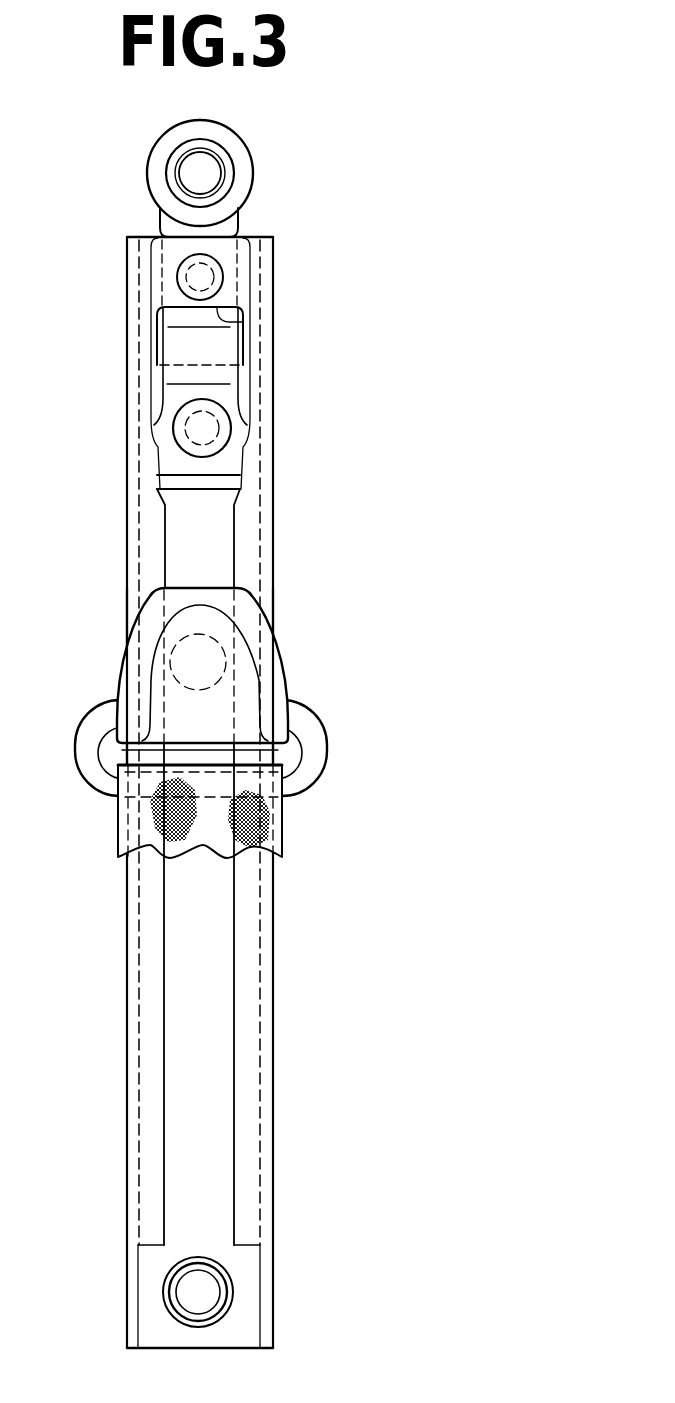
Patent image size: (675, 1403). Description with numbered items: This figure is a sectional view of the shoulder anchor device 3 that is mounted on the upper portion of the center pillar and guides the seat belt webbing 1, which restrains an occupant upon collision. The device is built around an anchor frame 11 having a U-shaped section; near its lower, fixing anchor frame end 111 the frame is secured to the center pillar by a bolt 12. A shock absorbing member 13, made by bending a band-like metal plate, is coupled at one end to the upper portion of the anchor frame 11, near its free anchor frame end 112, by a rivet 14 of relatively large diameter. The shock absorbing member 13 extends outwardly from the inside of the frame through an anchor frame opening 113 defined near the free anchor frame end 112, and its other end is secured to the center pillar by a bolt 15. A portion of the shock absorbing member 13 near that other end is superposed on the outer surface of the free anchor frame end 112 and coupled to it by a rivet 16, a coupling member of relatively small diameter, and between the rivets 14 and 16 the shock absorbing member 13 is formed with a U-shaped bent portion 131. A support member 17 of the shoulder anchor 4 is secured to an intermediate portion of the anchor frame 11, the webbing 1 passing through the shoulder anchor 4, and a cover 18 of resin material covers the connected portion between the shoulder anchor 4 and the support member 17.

The webbing 1 is at (286, 828).
The shoulder anchor device 3 is at (223, 643).
The shoulder anchor 4 is at (326, 757).
The anchor frame 11 is at (216, 786).
The fixing anchor frame end 111 is at (244, 1320).
The free anchor frame end 112 is at (267, 258).
The anchor frame opening 113 is at (224, 317).
The bolt 12 is at (187, 1288).
The shock absorbing member 13 is at (202, 421).
The U-shaped bent portion 131 is at (187, 343).
The rivet 14 is at (192, 428).
The bolt 15 is at (190, 178).
The rivet 16 is at (195, 281).
The support member 17 is at (192, 645).
The cover 18 is at (152, 690).